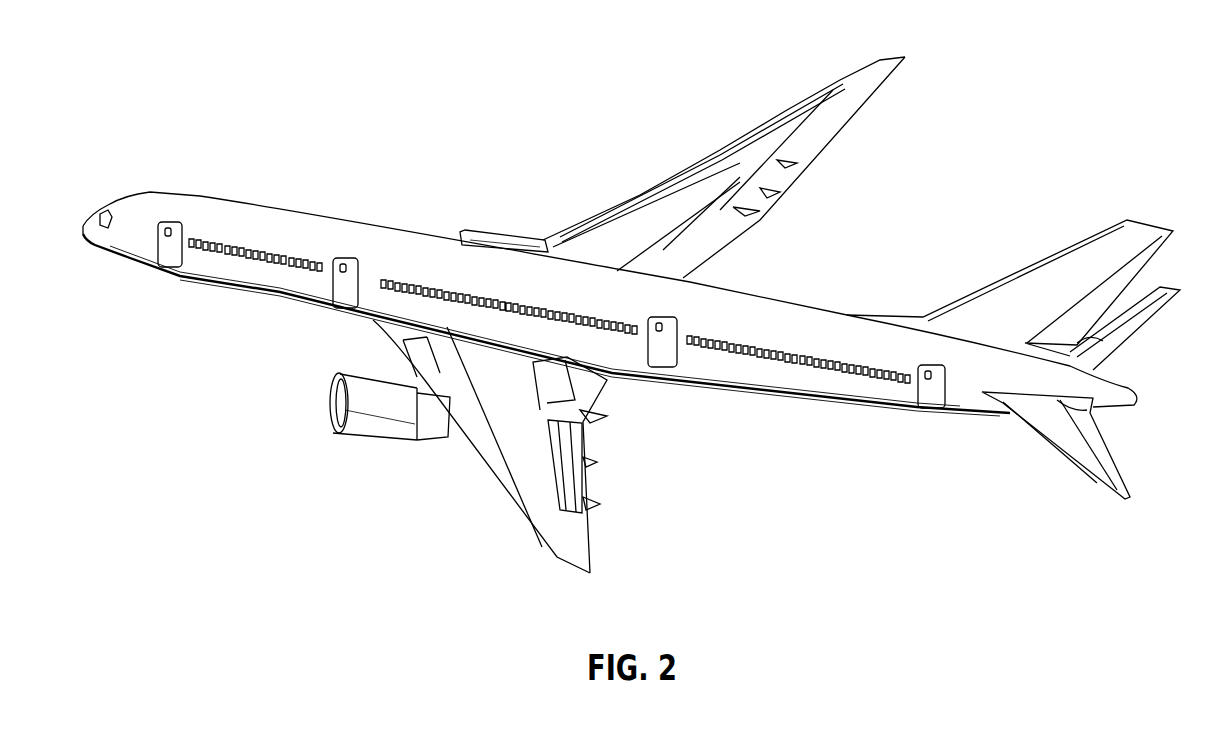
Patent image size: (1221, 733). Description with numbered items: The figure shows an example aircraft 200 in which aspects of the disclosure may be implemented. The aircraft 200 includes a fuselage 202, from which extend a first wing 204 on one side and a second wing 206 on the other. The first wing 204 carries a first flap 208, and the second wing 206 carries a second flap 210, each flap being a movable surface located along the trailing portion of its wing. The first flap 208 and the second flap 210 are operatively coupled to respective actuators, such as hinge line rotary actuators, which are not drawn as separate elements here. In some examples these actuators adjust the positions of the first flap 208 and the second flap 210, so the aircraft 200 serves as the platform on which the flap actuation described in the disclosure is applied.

The aircraft 200 is at (988, 100).
The fuselage 202 is at (345, 230).
The first wing 204 is at (517, 443).
The second wing 206 is at (637, 233).
The first flap 208 is at (573, 480).
The second flap 210 is at (720, 218).